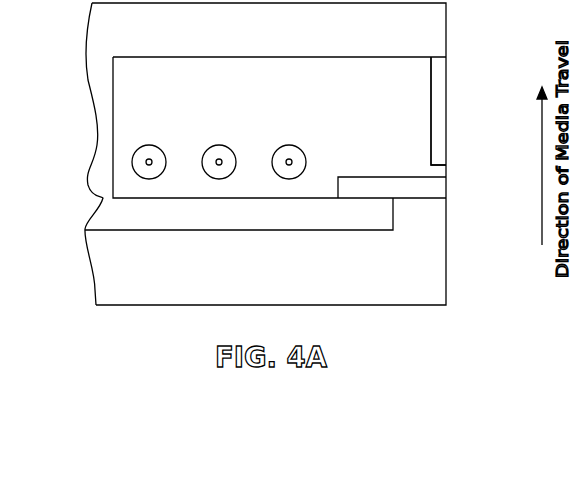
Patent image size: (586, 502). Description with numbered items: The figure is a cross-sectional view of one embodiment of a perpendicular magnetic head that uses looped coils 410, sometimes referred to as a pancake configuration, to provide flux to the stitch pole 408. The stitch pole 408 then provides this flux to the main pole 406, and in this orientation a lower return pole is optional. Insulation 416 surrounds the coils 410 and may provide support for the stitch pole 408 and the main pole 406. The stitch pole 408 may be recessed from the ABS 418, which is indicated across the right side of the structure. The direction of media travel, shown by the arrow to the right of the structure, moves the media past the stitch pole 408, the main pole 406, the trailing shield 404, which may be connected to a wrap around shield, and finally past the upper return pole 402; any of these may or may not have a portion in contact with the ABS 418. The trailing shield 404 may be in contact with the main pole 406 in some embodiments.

The upper return pole 402 is at (352, 40).
The trailing shield 404 is at (446, 92).
The main pole 406 is at (446, 183).
The stitch pole 408 is at (298, 224).
The looped coils 410 is at (148, 145).
The insulation 416 is at (391, 135).
The ABS 418 is at (446, 22).